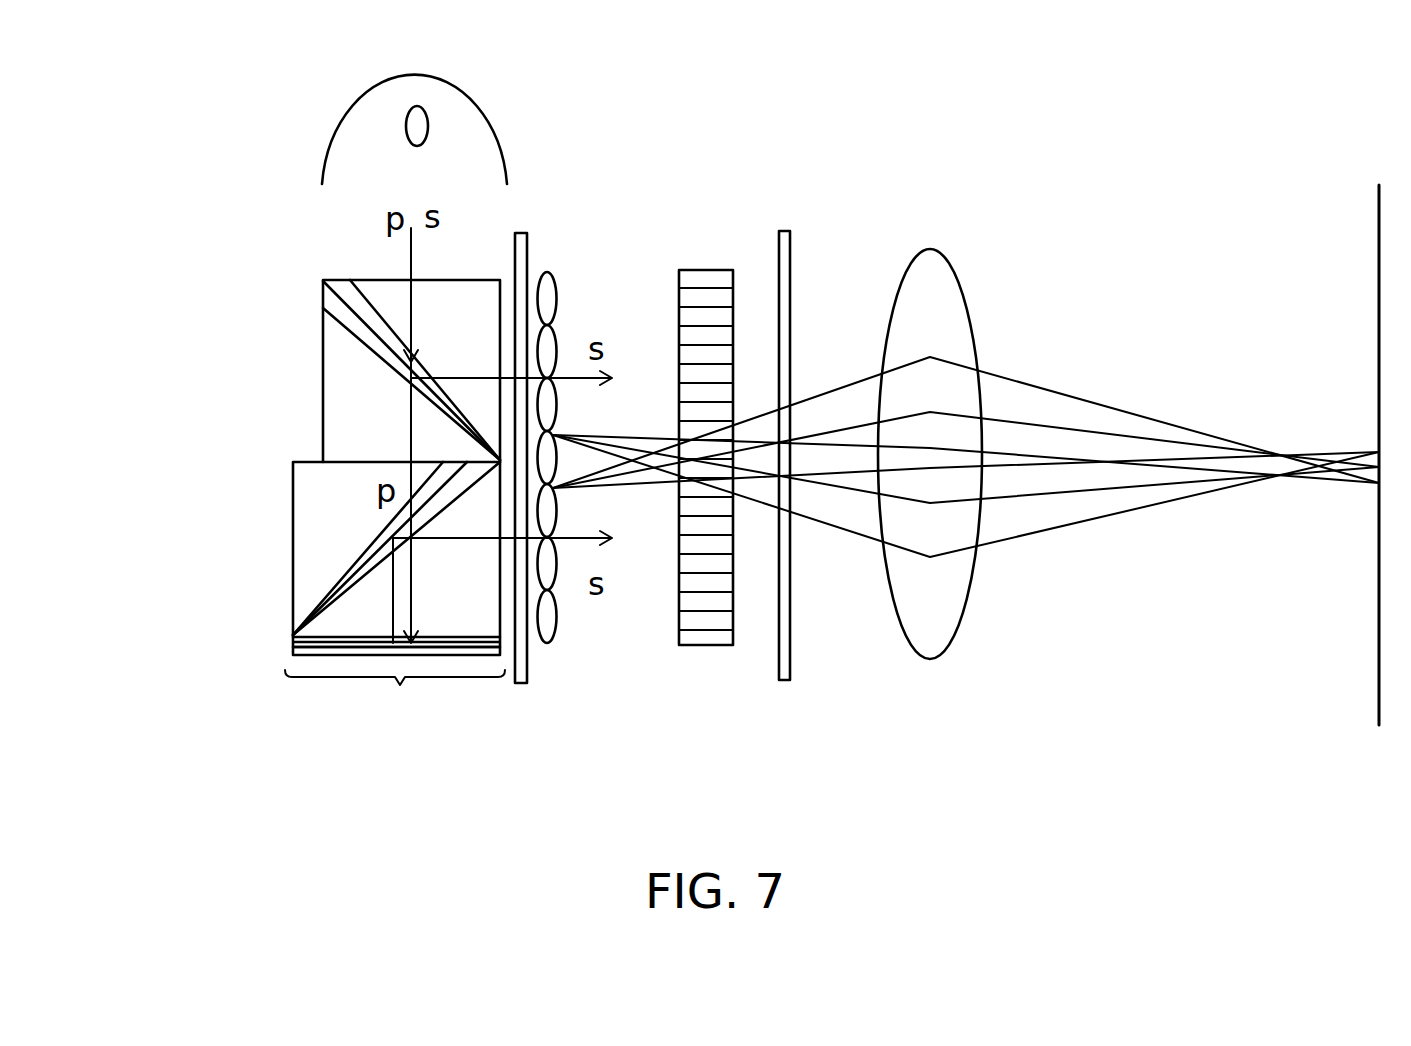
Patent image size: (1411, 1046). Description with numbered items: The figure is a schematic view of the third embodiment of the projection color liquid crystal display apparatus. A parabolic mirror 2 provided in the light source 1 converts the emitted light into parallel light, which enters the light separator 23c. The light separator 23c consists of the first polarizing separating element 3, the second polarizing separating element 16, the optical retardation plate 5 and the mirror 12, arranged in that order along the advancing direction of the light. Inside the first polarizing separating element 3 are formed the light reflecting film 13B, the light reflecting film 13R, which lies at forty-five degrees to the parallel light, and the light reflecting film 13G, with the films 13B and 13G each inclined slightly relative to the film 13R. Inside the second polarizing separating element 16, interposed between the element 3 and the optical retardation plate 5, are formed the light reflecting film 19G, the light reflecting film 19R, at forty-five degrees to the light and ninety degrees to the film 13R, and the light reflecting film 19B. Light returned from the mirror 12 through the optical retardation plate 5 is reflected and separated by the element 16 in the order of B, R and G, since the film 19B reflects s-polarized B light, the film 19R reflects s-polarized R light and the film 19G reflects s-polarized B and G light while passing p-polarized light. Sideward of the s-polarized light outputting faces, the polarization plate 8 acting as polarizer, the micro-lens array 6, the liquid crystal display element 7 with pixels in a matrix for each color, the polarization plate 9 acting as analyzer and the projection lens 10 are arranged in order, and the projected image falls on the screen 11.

The light source 1 is at (405, 112).
The parabolic mirror 2 is at (497, 137).
The first polarizing separating element 3 is at (383, 287).
The optical retardation plate 5 is at (290, 642).
The micro-lens array 6 is at (553, 290).
The liquid crystal display element 7 is at (713, 638).
The polarization plate 8 is at (528, 662).
The polarization plate 9 is at (787, 655).
The projection lens 10 is at (953, 302).
The screen 11 is at (1378, 272).
The mirror 12 is at (333, 647).
The light reflecting film 13B is at (347, 295).
The light reflecting film 13R is at (345, 306).
The light reflecting film 13G is at (358, 338).
The second polarizing separating element 16 is at (307, 490).
The light reflecting film 19G is at (385, 521).
The light reflecting film 19R is at (365, 541).
The light reflecting film 19B is at (350, 567).
The light separator 23c is at (402, 692).